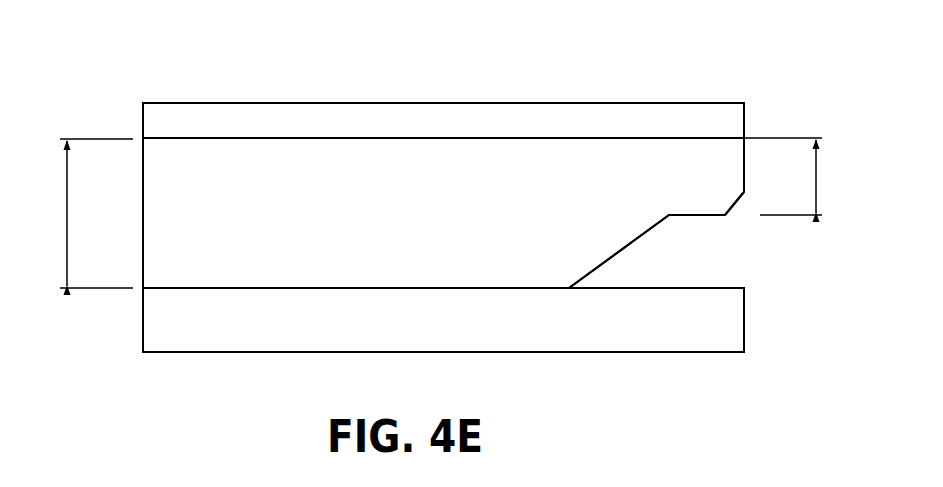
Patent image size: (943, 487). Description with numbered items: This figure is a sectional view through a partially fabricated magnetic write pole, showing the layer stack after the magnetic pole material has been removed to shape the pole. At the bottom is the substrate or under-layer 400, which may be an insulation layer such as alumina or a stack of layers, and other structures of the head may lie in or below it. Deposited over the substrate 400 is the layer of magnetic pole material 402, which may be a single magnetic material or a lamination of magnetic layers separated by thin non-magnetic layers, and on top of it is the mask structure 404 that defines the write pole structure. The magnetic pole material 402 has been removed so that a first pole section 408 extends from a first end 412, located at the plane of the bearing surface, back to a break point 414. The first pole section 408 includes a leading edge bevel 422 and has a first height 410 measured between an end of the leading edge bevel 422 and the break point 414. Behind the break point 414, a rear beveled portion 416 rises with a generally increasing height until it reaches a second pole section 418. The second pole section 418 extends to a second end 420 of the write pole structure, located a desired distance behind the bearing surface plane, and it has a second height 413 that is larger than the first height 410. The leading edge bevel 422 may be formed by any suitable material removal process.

The substrate or under-layer 400 is at (443, 320).
The magnetic pole material 402 is at (443, 213).
The mask structure 404 is at (605, 127).
The first pole section 408 is at (688, 167).
The first height 410 is at (789, 176).
The first end 412 is at (745, 193).
The second height 413 is at (90, 213).
The break point 414 is at (670, 216).
The rear beveled portion 416 is at (618, 250).
The second pole section 418 is at (517, 270).
The second end 420 is at (140, 188).
The leading edge bevel 422 is at (730, 213).